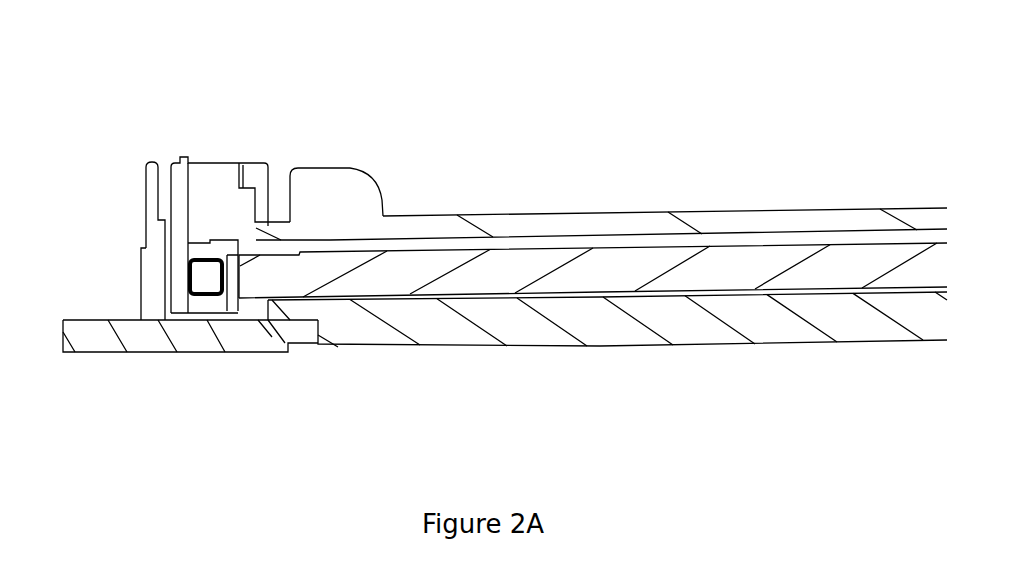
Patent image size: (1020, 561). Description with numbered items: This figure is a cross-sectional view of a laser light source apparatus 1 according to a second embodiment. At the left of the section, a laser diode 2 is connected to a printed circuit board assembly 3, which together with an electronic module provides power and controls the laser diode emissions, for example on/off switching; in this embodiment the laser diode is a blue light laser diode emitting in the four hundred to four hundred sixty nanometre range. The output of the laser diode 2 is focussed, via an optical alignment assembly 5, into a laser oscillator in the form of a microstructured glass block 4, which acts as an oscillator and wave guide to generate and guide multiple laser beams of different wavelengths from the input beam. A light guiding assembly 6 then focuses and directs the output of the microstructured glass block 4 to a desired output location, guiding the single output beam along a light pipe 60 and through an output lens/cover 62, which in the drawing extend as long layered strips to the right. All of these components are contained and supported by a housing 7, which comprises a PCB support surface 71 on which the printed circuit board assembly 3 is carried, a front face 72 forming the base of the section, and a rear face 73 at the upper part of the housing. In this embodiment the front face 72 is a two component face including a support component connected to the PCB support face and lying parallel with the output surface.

The laser light source apparatus 1 is at (96, 62).
The laser diode 2 is at (200, 277).
The printed circuit board assembly 3 is at (183, 190).
The microstructured glass block 4 is at (232, 283).
The optical alignment assembly 5 is at (222, 245).
The light guiding assembly 6 is at (254, 243).
The housing 7 is at (324, 148).
The light pipe 60 is at (603, 243).
The output lens/cover 62 is at (368, 333).
The PCB support surface 71 is at (140, 204).
The front face 72 is at (135, 358).
The rear face 73 is at (358, 192).